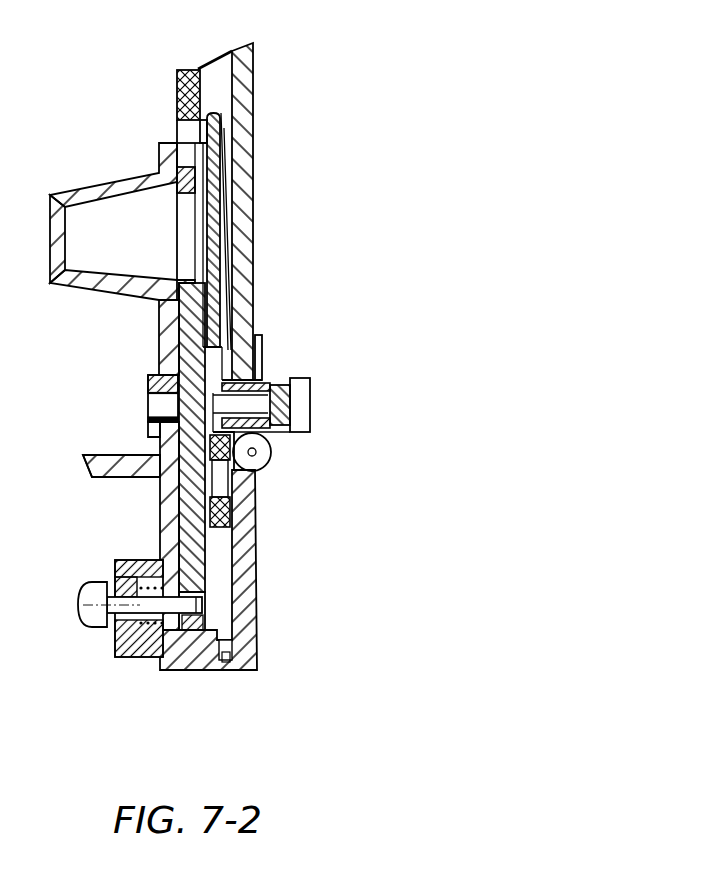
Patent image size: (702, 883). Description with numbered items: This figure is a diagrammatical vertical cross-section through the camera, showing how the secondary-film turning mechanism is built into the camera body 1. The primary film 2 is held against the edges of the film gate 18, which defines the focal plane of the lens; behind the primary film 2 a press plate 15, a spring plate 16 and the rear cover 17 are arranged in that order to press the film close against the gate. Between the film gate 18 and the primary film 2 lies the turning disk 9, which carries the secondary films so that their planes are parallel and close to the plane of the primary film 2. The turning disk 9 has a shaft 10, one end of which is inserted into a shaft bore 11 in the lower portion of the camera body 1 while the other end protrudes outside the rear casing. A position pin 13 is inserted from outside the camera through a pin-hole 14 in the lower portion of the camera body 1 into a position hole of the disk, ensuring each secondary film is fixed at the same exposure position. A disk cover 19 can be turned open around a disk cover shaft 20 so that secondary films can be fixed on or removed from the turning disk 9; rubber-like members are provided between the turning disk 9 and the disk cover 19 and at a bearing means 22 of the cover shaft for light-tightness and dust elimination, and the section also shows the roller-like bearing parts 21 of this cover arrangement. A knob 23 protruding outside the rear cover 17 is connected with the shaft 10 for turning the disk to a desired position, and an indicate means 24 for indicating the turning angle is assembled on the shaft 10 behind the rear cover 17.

The camera body 1 is at (193, 112).
The primary film 2 is at (231, 157).
The turning disk 9 is at (203, 543).
The shaft 10 is at (160, 407).
The shaft bore 11 is at (148, 418).
The position pin 13 is at (93, 625).
The pin-hole 14 is at (140, 657).
The press plate 15 is at (204, 140).
The spring plate 16 is at (231, 164).
The rear cover 17 is at (245, 70).
The film gate 18 is at (208, 143).
The disk cover 19 is at (245, 617).
The disk cover shaft 20 is at (262, 455).
The bearings 21 is at (248, 477).
The bearing means 22 is at (270, 447).
The knob 23 is at (298, 388).
The indicate means 24 is at (262, 352).